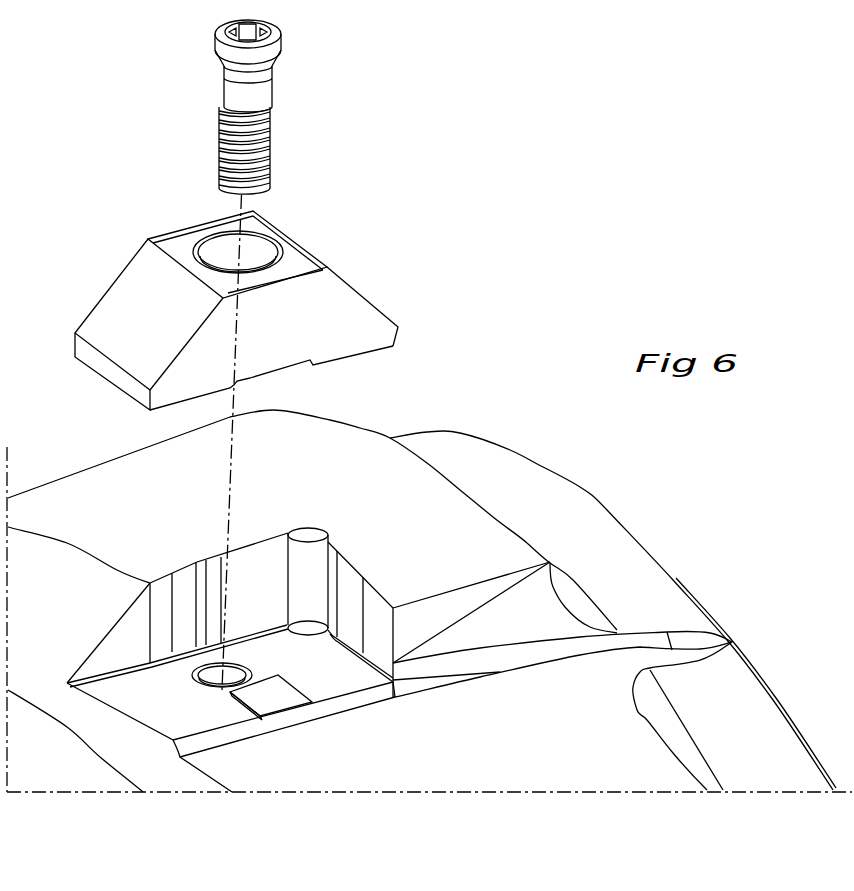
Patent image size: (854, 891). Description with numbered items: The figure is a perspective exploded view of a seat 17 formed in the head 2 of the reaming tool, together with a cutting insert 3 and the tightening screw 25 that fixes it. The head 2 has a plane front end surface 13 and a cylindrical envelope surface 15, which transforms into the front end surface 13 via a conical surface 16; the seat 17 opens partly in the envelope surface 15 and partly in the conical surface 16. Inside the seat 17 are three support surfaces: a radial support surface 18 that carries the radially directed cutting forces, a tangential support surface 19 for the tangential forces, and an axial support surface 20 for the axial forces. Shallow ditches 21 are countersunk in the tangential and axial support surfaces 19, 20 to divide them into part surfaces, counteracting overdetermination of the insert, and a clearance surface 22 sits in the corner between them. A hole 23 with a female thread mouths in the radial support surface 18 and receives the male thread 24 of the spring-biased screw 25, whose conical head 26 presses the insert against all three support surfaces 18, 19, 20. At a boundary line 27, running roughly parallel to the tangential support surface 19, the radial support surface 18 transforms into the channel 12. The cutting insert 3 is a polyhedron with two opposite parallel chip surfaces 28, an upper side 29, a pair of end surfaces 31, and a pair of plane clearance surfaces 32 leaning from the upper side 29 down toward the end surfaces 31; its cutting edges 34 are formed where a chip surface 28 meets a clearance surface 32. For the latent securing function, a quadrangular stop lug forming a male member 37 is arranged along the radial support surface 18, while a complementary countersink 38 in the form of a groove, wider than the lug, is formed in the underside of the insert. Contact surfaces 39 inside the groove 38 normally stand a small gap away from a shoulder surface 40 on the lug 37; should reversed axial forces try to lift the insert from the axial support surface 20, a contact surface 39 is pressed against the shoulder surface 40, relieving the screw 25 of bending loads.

The head 2 is at (429, 601).
The cutting insert 3 is at (226, 320).
The channel 12 is at (444, 756).
The front end surface 13 is at (29, 772).
The cylindrical envelope surface 15 is at (114, 516).
The conical surface 16 is at (35, 622).
The seat 17 is at (350, 583).
The radial support surface 18 is at (114, 699).
The tangential support surface 19 is at (239, 602).
The axial support surface 20 is at (362, 643).
The shallow ditches 21 is at (185, 583).
The clearance surface 22 is at (309, 542).
The hole 23 is at (233, 677).
The male thread 24 is at (217, 133).
The screw 25 is at (242, 107).
The conical head 26 is at (215, 49).
The boundary line 27 is at (242, 722).
The chip surfaces 28 is at (261, 337).
The upper side 29 is at (297, 257).
The end surfaces 31 is at (101, 365).
The plane surfaces 32 is at (133, 317).
The cutting edges 34 is at (187, 350).
The male member 37 is at (261, 694).
The countersink 38 is at (306, 378).
The contact surfaces 39 is at (237, 387).
The shoulder surface 40 is at (290, 681).